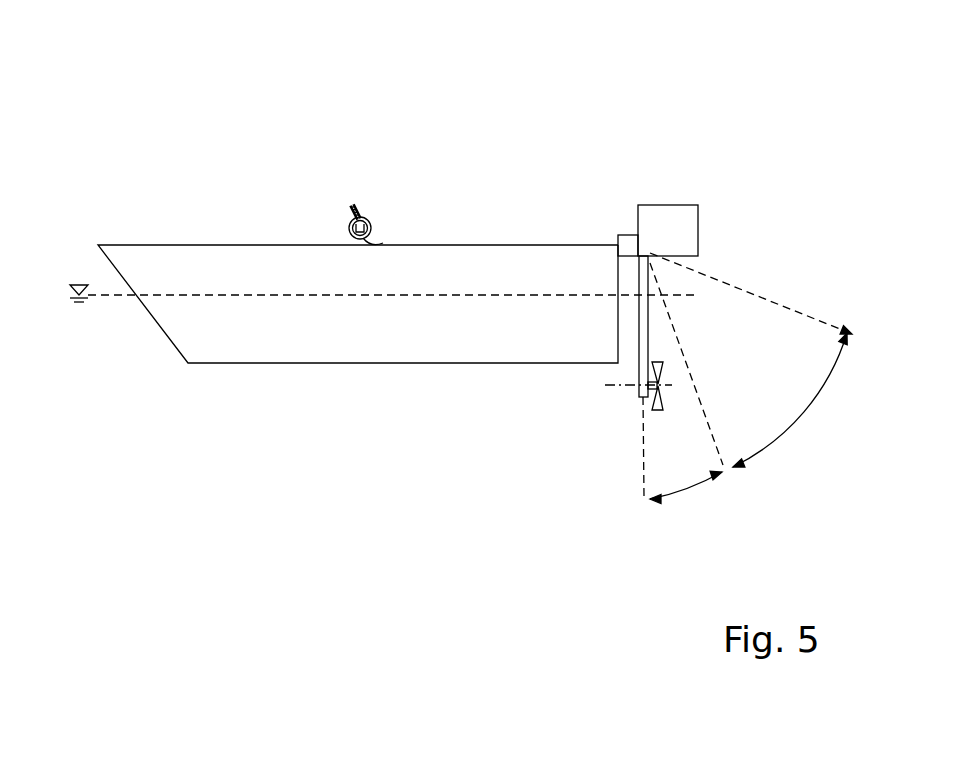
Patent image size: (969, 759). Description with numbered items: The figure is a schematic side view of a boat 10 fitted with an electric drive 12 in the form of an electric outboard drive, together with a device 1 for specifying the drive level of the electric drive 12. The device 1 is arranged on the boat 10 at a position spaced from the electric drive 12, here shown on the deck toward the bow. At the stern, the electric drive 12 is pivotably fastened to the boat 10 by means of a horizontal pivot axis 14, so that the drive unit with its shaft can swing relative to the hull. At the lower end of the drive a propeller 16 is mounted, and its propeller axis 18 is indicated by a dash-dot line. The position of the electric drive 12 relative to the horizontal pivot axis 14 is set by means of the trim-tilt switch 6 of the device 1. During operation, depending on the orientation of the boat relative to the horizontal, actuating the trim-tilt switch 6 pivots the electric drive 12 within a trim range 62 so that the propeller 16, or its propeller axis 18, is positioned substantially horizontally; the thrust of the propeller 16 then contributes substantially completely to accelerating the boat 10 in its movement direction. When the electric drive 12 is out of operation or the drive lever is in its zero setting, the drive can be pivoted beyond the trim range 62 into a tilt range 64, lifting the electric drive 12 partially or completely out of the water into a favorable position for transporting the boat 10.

The boat 10 is at (610, 75).
The device 1 is at (353, 188).
The trim-tilt switch 6 is at (340, 209).
The electric drive 12 is at (599, 311).
The horizontal pivot axis 14 is at (626, 235).
The propeller 16 is at (655, 412).
The propeller axis 18 is at (605, 385).
The trim range 62 is at (687, 490).
The tilt range 64 is at (785, 427).